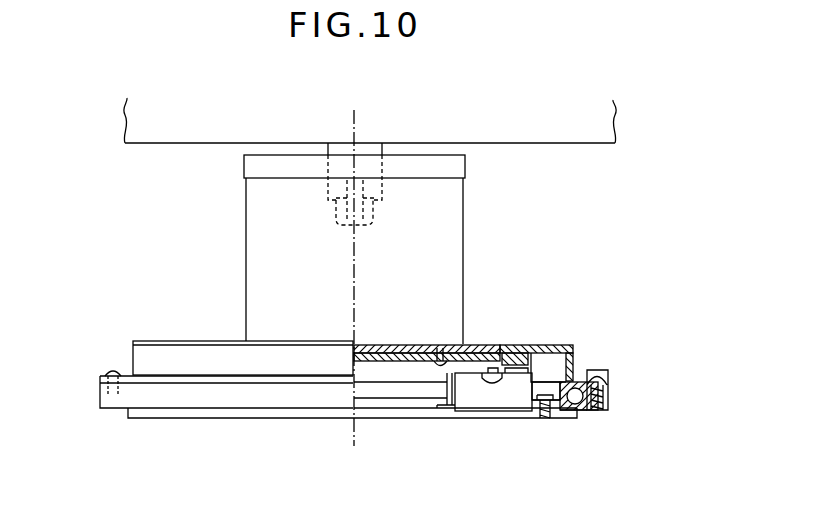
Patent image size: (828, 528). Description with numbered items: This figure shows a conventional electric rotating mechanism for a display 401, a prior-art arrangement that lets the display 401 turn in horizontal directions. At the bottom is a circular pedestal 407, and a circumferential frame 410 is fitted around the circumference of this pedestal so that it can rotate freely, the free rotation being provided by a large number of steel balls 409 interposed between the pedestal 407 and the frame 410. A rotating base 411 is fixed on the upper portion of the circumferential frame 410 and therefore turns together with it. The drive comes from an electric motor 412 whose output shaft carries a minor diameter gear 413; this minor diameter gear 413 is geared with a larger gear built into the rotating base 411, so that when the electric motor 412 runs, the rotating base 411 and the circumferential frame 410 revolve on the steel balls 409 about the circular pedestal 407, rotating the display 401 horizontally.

The display 401 is at (163, 134).
The circular pedestal 407 is at (233, 414).
The steel balls 409 is at (591, 411).
The circumferential frame 410 is at (157, 395).
The rotating base 411 is at (175, 350).
The electric motor 412 is at (472, 400).
The minor diameter gear 413 is at (522, 345).